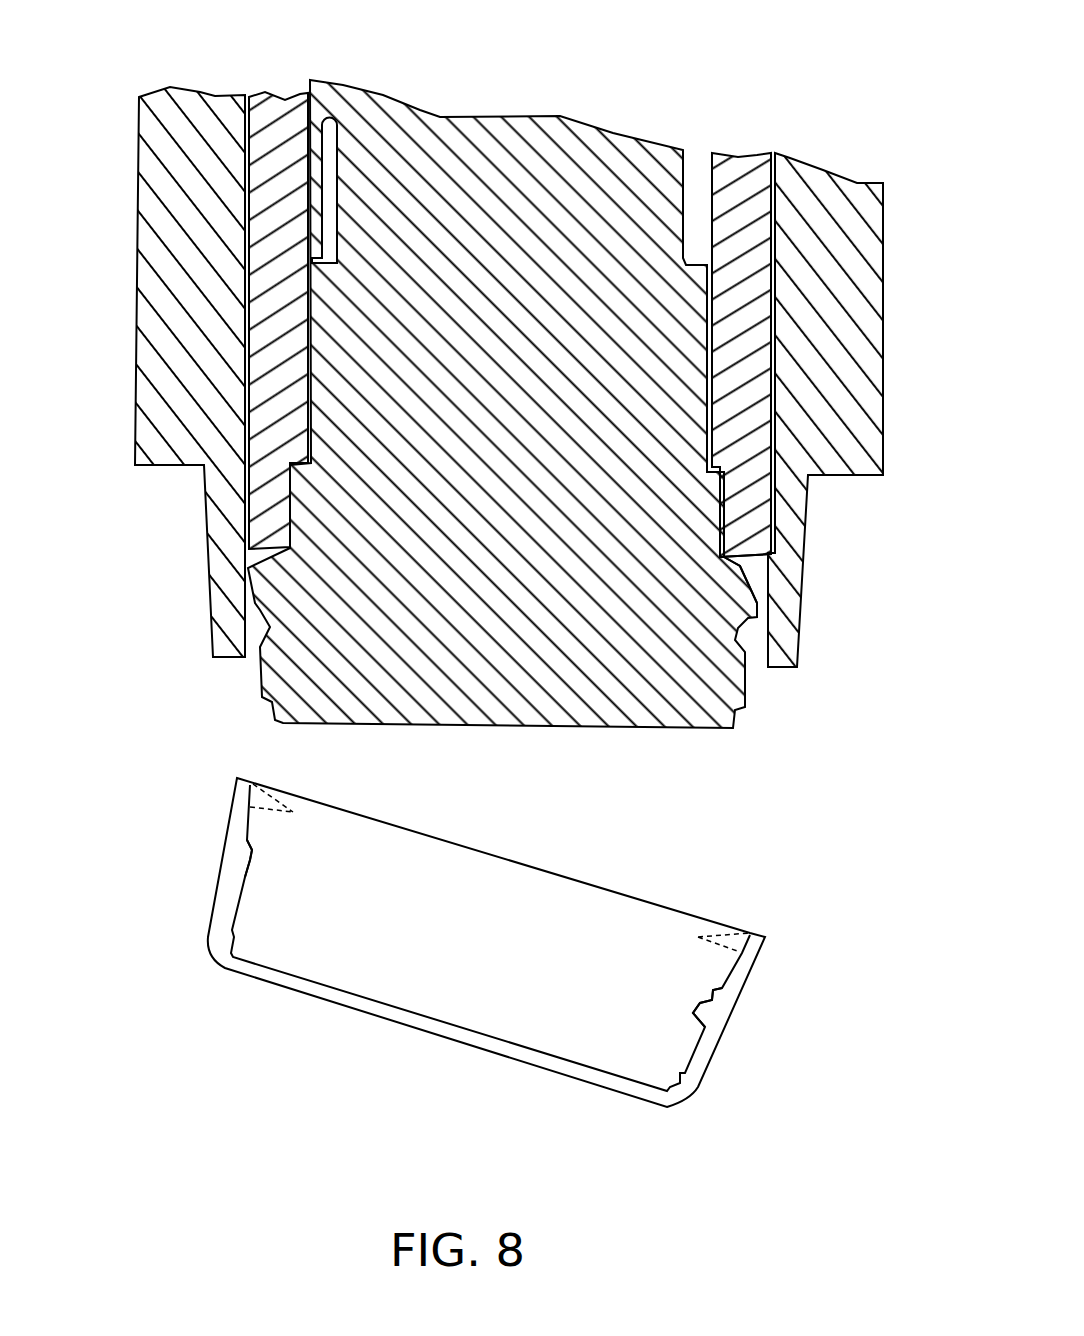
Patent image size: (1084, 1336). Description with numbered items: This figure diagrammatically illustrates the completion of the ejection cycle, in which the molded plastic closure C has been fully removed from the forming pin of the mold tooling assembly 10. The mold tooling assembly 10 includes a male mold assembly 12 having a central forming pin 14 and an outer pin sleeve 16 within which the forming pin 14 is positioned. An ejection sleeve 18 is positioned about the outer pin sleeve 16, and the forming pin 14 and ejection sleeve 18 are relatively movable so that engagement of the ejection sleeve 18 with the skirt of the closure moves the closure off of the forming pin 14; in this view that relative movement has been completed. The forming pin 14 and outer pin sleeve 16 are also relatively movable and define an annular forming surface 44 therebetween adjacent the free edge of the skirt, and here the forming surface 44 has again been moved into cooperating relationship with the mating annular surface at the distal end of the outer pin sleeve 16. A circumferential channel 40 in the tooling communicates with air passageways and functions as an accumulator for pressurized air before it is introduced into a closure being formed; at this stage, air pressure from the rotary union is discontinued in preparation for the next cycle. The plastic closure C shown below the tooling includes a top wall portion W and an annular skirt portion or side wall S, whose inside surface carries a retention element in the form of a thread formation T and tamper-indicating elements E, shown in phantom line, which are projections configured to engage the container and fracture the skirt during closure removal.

The mold tooling assembly 10 is at (500, 390).
The male mold assembly 12 is at (896, 267).
The central forming pin 14 is at (502, 412).
The outer pin sleeve 16 is at (286, 98).
The ejection sleeve 18 is at (137, 358).
The circumferential channel 40 is at (323, 118).
The annular forming surface 44 is at (743, 563).
The tamper-indicating element E is at (272, 794).
The thread formation T is at (256, 873).
The plastic closure C is at (711, 912).
The annular skirt portion S is at (720, 1010).
The top wall portion W is at (497, 939).